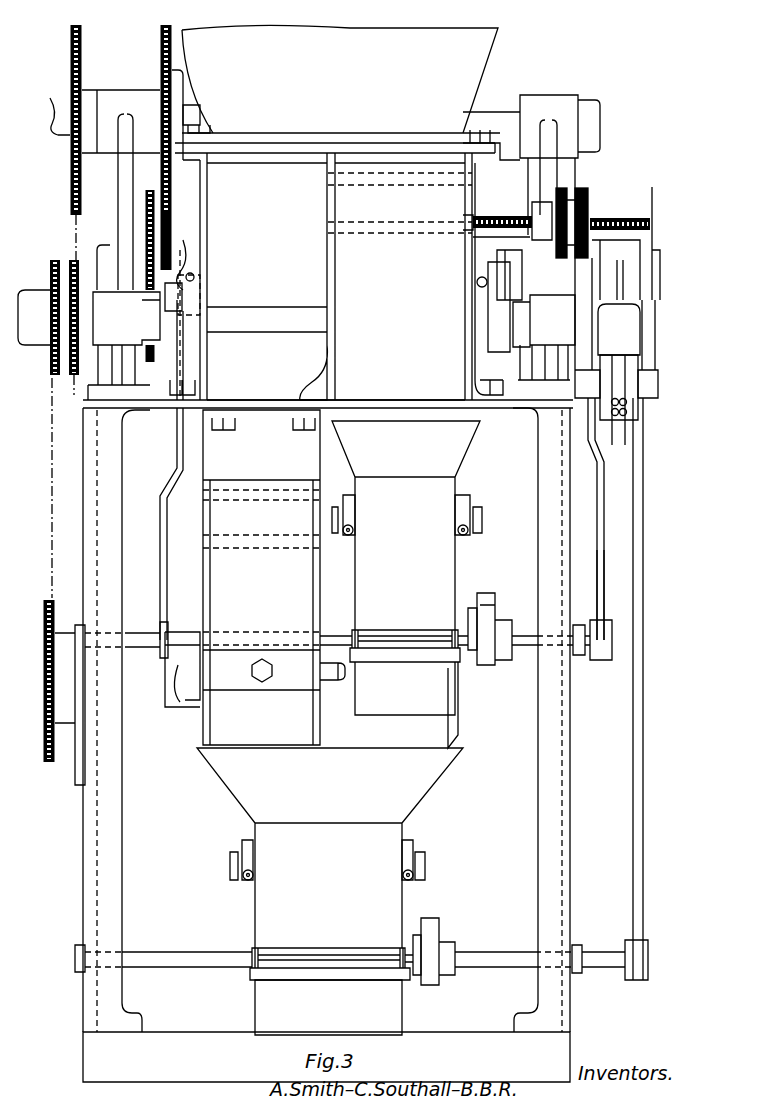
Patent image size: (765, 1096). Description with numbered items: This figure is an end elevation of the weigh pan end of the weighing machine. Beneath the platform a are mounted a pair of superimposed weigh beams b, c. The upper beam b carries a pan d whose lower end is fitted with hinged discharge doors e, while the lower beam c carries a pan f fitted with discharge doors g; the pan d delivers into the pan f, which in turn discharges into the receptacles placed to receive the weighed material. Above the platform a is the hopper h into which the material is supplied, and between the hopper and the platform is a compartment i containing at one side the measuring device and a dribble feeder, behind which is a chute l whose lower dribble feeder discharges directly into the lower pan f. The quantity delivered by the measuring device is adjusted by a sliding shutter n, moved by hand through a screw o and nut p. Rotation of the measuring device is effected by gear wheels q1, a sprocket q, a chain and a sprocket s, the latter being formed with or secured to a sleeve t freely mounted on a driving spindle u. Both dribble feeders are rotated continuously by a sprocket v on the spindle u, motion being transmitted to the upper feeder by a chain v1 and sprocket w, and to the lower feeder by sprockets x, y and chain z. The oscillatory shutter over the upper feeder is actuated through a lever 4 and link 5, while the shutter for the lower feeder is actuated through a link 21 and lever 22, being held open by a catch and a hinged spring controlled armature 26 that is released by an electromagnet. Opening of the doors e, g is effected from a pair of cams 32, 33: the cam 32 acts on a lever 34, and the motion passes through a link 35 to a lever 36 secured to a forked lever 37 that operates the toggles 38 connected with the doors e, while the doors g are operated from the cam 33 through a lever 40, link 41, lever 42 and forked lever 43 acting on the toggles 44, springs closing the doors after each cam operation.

The platform a is at (500, 408).
The upper weigh beam b is at (482, 517).
The lower weigh beam c is at (425, 862).
The upper weigh pan d is at (455, 562).
The hinged discharge doors e is at (406, 705).
The lower weigh pan f is at (260, 912).
The discharge doors g is at (328, 1007).
The hopper h is at (340, 79).
The compartment i is at (207, 190).
The chute l is at (271, 276).
The sliding shutter n is at (540, 225).
The screw o is at (617, 218).
The nut p is at (590, 190).
The sprocket q is at (172, 253).
The gear wheels q1 is at (145, 212).
The sprocket s is at (160, 48).
The sleeve t is at (200, 118).
The driving spindle u is at (50, 105).
The sprocket v is at (70, 48).
The chain v1 is at (70, 232).
The sprocket w is at (73, 338).
The sprocket x is at (50, 266).
The sprocket y is at (43, 640).
The chain z is at (48, 452).
The lever 4 is at (493, 307).
The link 5 is at (518, 292).
The link 21 is at (177, 462).
The lever 22 is at (198, 300).
The hinged spring controlled armature 26 is at (172, 665).
The cam 32 is at (587, 332).
The cam 33 is at (650, 330).
The lever 34 is at (602, 423).
The link 35 is at (603, 560).
The lever 36 is at (606, 656).
The forked lever 37 is at (495, 598).
The toggles 38 is at (468, 615).
The lever 40 is at (638, 392).
The link 41 is at (643, 590).
The lever 42 is at (648, 975).
The forked lever 43 is at (439, 915).
The toggles 44 is at (413, 936).